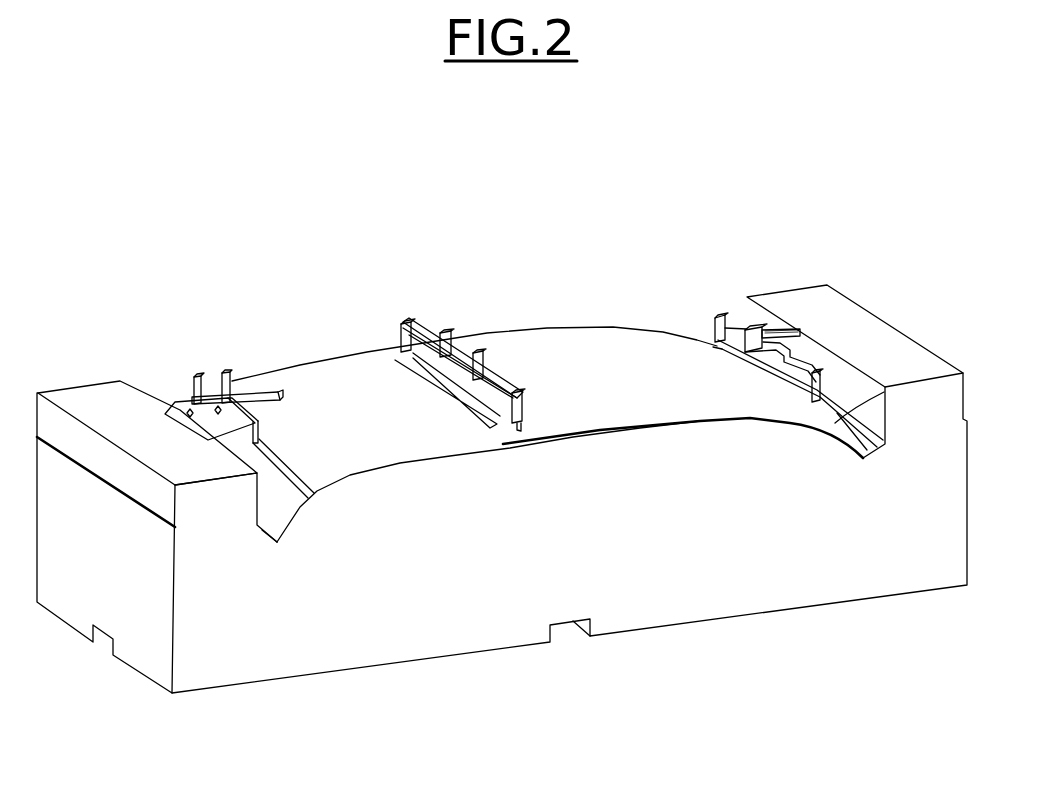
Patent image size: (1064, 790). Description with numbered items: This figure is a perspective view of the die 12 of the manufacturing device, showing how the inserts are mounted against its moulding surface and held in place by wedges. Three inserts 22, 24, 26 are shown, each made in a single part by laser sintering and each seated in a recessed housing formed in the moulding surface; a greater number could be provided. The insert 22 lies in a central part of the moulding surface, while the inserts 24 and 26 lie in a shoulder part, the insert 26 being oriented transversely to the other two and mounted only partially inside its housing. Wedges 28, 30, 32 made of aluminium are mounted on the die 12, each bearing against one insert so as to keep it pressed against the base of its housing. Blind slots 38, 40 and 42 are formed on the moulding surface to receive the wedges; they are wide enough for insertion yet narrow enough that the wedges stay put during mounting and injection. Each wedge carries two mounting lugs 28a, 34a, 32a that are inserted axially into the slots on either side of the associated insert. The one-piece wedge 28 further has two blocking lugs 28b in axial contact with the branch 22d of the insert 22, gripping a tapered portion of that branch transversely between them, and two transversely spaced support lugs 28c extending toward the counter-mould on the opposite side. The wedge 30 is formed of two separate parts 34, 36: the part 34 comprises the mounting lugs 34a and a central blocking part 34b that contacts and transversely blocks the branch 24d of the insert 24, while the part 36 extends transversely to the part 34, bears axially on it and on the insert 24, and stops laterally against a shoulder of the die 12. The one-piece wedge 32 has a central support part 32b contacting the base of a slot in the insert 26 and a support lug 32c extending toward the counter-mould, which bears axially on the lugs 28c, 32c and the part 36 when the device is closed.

The die 12 is at (365, 645).
The insert 22 is at (398, 347).
The branch of the insert 22d is at (447, 393).
The insert 24 is at (775, 380).
The branch of the insert 24d is at (762, 376).
The insert 26 is at (190, 394).
The wedge 28 is at (443, 475).
The mounting lugs 28a is at (401, 340).
The blocking lugs 28b is at (438, 345).
The support lugs 28c is at (476, 348).
The wedge 30 is at (847, 436).
The wedge 32 is at (227, 378).
The mounting lugs 32a is at (198, 402).
The central support part 32b is at (222, 391).
The support lug 32c is at (231, 358).
The part of the wedge 34 is at (800, 362).
The mounting lugs 34a is at (728, 316).
The central blocking part 34b is at (797, 329).
The part of the wedge 36 is at (790, 352).
The slot 38 is at (400, 350).
The slot 40 is at (886, 388).
The slot 42 is at (316, 497).